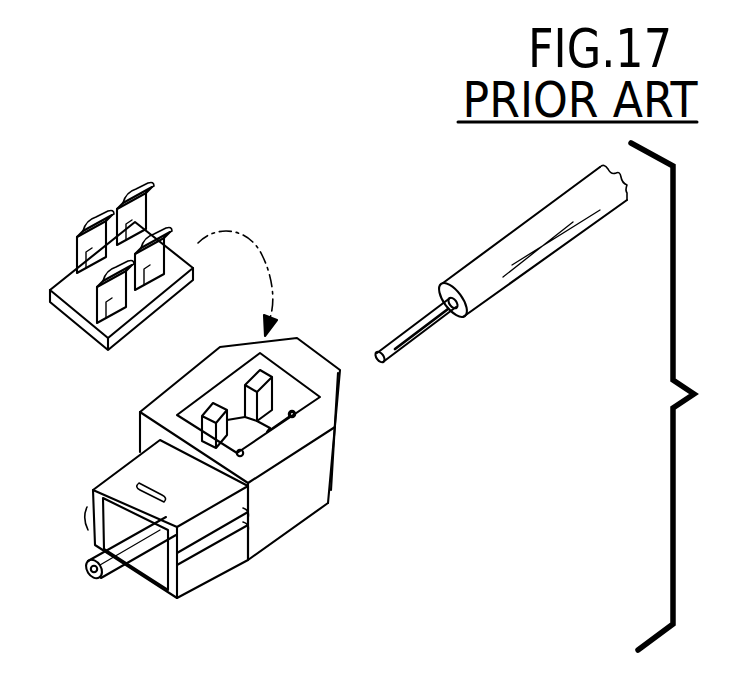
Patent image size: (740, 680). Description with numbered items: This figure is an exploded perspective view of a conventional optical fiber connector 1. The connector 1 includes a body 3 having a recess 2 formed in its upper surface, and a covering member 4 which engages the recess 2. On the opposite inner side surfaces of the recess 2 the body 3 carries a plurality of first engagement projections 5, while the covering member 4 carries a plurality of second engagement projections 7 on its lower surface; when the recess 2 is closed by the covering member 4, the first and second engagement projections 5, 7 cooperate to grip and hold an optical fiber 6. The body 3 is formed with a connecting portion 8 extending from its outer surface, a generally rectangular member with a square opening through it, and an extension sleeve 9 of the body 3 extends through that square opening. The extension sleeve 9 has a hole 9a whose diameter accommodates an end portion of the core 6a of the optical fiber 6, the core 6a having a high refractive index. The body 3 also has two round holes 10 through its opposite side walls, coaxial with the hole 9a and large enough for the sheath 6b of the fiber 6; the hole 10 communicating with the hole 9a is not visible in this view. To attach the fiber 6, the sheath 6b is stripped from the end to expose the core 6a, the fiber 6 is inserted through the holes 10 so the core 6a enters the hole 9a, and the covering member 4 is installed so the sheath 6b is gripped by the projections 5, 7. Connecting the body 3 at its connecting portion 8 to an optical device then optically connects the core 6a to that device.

The optical fiber connector 1 is at (84, 431).
The recess 2 is at (160, 393).
The body 3 is at (280, 527).
The covering member 4 is at (67, 287).
The first engagement projections 5 is at (213, 406).
The optical fiber 6 is at (538, 228).
The core 6a is at (388, 358).
The sheath 6b is at (458, 316).
The second engagement projections 7 is at (129, 196).
The connecting portion 8 is at (207, 567).
The extension sleeve 9 is at (110, 567).
The hole 9a is at (90, 576).
The round holes 10 is at (296, 415).